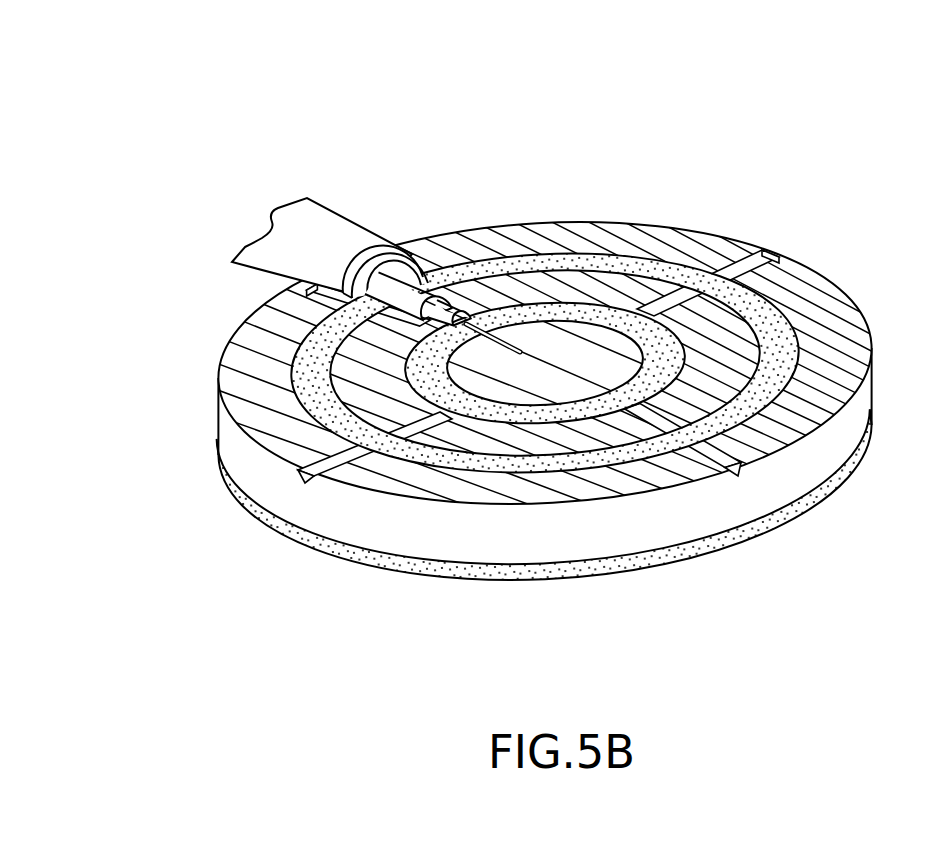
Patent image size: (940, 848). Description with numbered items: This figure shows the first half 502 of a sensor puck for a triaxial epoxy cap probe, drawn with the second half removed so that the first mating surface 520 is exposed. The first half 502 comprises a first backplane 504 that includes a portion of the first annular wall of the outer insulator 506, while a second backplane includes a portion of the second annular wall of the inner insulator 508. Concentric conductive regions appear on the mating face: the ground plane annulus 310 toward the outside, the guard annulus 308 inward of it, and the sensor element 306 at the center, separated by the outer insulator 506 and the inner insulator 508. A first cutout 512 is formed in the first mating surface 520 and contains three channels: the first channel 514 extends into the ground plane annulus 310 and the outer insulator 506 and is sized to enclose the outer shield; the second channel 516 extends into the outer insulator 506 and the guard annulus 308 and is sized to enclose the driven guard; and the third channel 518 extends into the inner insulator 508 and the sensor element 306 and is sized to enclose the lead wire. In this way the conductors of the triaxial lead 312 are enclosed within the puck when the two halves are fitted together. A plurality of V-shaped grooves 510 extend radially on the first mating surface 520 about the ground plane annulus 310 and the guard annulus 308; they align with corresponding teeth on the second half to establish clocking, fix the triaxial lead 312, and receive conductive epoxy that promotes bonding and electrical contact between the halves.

The first half 502 is at (807, 108).
The first mating surface 520 is at (565, 203).
The triaxial lead 312 is at (343, 203).
The first cutout 512 is at (458, 273).
The sensor element 306 is at (598, 335).
The outer insulator 506 is at (770, 310).
The inner insulator 508 is at (673, 343).
The first channel 514 is at (330, 298).
The second channel 516 is at (367, 338).
The third channel 518 is at (415, 388).
The guard annulus 308 is at (513, 440).
The ground plane annulus 310 is at (587, 488).
The V-shaped grooves 510 is at (740, 468).
The first backplane 504 is at (848, 477).